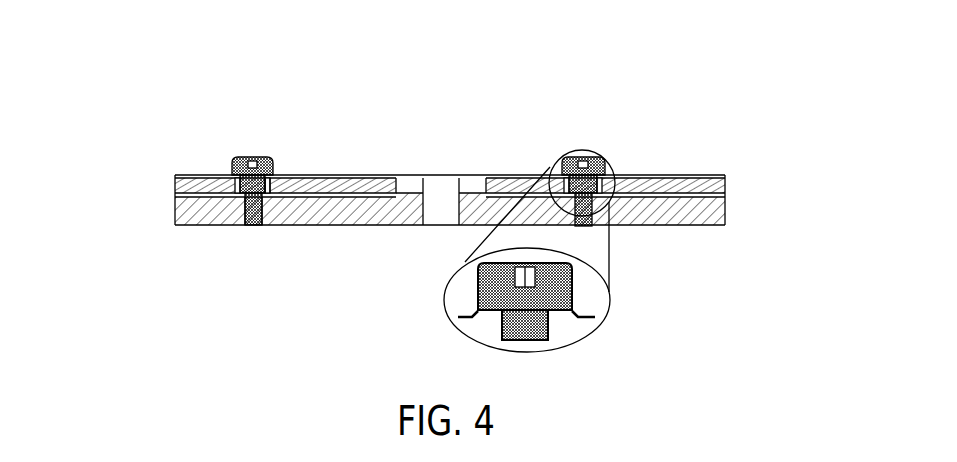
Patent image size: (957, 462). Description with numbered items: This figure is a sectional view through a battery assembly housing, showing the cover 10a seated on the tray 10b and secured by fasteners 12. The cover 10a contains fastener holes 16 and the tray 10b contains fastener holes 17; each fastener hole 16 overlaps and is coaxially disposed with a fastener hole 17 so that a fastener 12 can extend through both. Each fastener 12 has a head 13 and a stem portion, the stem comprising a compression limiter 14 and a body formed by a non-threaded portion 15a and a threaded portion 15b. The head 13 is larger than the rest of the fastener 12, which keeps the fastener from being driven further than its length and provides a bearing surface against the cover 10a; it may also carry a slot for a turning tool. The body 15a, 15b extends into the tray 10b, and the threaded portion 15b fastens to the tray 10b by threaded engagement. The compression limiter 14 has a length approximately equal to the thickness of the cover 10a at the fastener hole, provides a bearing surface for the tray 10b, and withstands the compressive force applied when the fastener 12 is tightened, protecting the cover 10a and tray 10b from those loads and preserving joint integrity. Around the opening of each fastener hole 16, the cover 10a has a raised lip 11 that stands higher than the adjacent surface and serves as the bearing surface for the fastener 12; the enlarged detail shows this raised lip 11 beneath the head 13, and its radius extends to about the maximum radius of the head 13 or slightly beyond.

The cover 10a is at (712, 180).
The tray 10b is at (671, 225).
The raised lip 11 is at (562, 179).
The fastener 12 is at (475, 93).
The head 13 is at (233, 162).
The compression limiter 14 is at (242, 184).
The non-threaded portion 15a is at (243, 198).
The threaded portion 15b is at (243, 210).
The fastener hole 16 is at (267, 185).
The fastener hole 17 is at (263, 198).